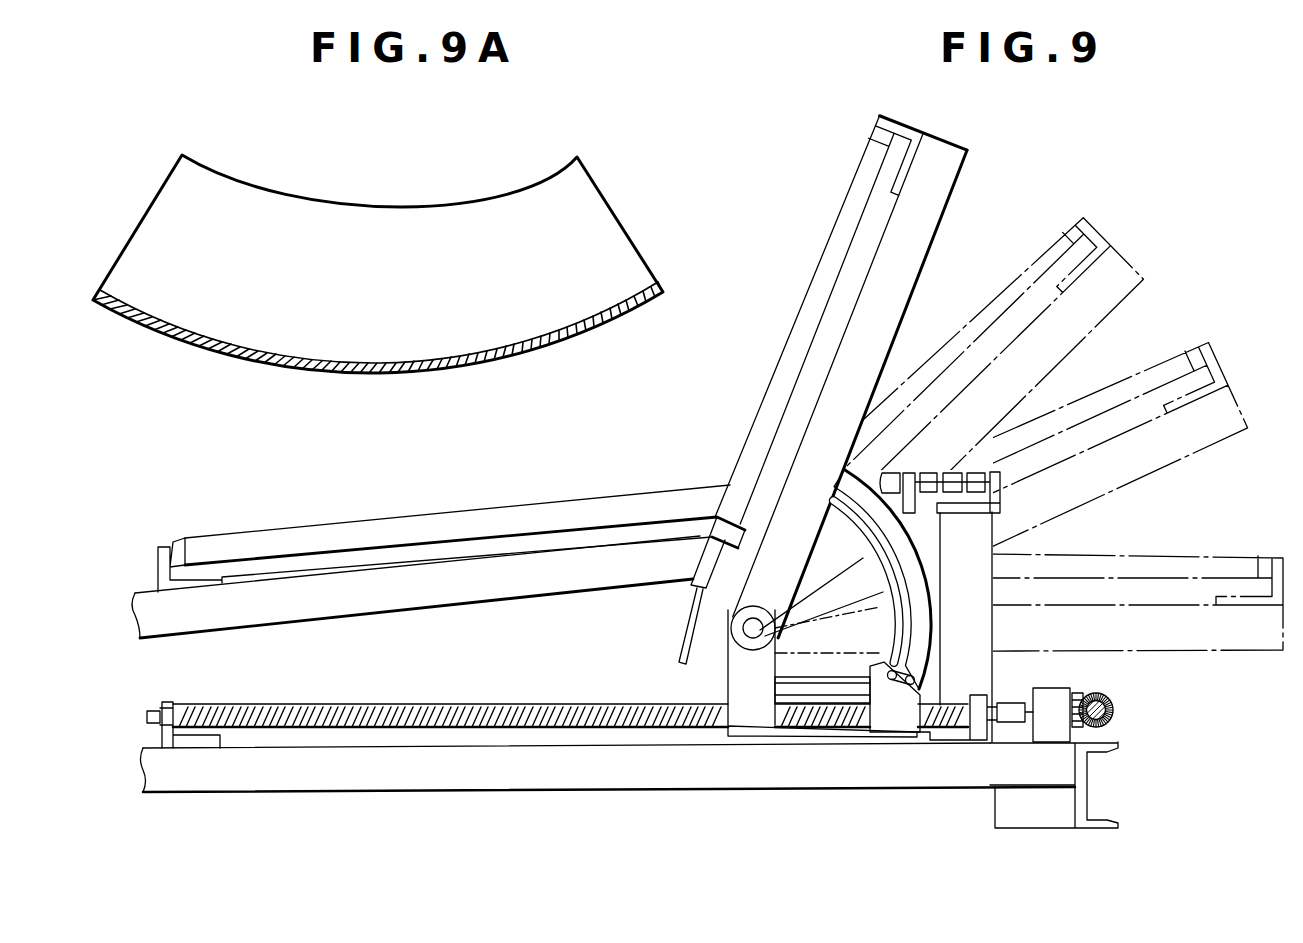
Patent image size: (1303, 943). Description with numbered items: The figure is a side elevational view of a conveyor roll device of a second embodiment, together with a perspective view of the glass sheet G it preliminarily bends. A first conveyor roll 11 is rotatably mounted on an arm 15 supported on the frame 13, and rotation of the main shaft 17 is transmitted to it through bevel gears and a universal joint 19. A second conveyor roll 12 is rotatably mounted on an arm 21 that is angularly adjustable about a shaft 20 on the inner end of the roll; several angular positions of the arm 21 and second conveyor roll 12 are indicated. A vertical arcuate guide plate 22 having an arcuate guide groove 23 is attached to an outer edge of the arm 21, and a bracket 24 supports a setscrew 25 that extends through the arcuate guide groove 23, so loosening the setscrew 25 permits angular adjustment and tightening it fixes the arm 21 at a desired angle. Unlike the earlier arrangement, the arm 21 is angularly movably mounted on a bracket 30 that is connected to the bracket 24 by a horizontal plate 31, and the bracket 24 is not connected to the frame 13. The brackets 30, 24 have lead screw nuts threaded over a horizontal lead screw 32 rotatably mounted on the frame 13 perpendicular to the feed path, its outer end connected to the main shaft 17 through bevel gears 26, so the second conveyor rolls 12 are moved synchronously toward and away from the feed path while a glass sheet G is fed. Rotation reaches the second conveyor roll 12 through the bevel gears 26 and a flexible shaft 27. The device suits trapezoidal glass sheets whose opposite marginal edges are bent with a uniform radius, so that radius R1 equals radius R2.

In FIG. 9, the first conveyor roll 11 is at (423, 522).
In FIG. 9, the second conveyor roll 12 is at (807, 300).
In FIG. 9, the frame 13 is at (487, 770).
In FIG. 9, the arm 15 is at (477, 592).
In FIG. 9, the main shaft 17 is at (1112, 723).
In FIG. 9, the universal joint 19 is at (947, 470).
In FIG. 9, the shaft 20 is at (742, 660).
In FIG. 9, the arm 21 is at (943, 183).
In FIG. 9, the vertical arcuate guide plate 22 is at (907, 561).
In FIG. 9, the arcuate guide groove 23 is at (912, 598).
In FIG. 9, the bracket 24 is at (893, 720).
In FIG. 9, the setscrew 25 is at (905, 688).
In FIG. 9, the bevel gears 26 is at (1102, 694).
In FIG. 9, the flexible shaft 27 is at (683, 640).
In FIG. 9, the bracket 30 is at (760, 717).
In FIG. 9, the horizontal plate 31 is at (825, 737).
In FIG. 9, the horizontal lead screw 32 is at (633, 737).
In FIG. 9A, the radius of curvature R1 is at (203, 275).
In FIG. 9A, the radius of curvature R2 is at (245, 188).
In FIG. 9A, the glass sheet G is at (407, 362).